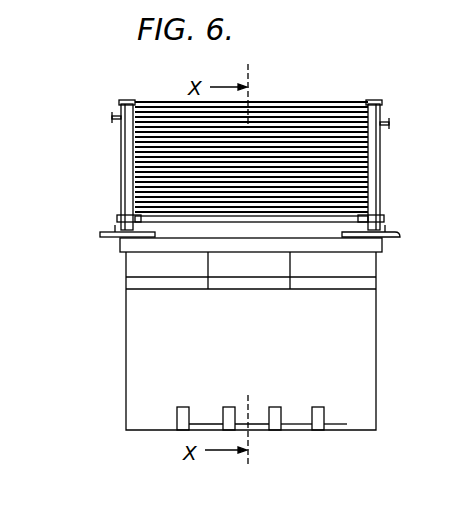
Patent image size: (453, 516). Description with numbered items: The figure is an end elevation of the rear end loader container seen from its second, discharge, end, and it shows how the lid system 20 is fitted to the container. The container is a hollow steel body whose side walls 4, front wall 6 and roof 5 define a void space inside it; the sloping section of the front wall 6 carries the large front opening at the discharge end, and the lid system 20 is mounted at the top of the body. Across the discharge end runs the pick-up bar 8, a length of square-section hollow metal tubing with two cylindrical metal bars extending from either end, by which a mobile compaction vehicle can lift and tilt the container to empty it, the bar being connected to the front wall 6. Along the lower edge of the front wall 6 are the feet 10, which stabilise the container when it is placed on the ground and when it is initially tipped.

The side walls 4 is at (382, 331).
The roof 5 is at (288, 95).
The front wall 6 is at (204, 349).
The pick-up bar 8 is at (392, 240).
The feet 10 is at (322, 415).
The lid system 20 is at (386, 166).